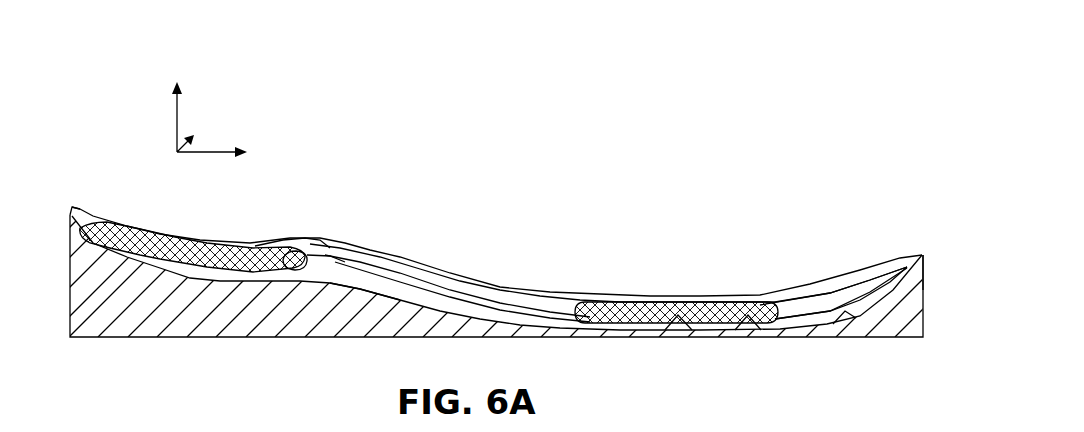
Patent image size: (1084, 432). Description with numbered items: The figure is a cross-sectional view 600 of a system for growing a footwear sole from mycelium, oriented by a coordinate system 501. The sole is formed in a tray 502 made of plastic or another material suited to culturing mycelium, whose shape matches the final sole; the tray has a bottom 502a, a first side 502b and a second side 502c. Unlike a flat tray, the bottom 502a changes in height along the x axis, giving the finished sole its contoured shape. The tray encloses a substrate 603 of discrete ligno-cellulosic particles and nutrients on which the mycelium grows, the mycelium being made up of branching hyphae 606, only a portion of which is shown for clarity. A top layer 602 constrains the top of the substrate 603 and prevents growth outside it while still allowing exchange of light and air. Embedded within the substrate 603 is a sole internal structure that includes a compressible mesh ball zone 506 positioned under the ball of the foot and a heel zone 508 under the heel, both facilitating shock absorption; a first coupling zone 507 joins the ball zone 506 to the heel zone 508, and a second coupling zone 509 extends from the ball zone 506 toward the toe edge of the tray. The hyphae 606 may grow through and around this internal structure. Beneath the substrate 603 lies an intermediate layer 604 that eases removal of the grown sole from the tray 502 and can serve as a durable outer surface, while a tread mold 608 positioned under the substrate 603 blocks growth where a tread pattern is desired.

The cross-sectional view 600 is at (818, 30).
The coordinate system 501 is at (238, 108).
The tray 502 is at (213, 327).
The bottom 502a is at (362, 290).
The first side 502b is at (923, 253).
The second side 502c is at (73, 207).
The ball zone 506 is at (704, 305).
The first coupling zone 507 is at (511, 294).
The heel zone 508 is at (168, 240).
The second coupling zone 509 is at (867, 288).
The top layer 602 is at (258, 240).
The substrate 603 is at (428, 272).
The intermediate layer 604 is at (553, 332).
The hyphae 606 is at (352, 226).
The tread mold 608 is at (748, 332).